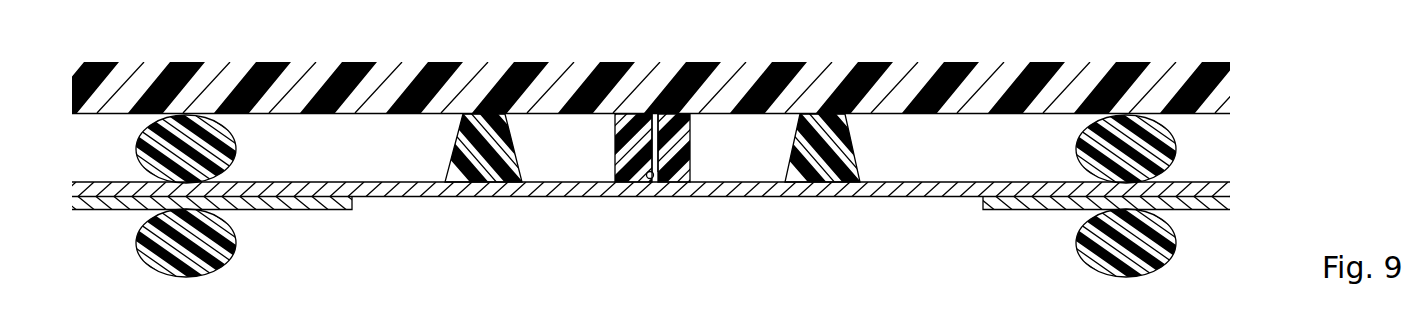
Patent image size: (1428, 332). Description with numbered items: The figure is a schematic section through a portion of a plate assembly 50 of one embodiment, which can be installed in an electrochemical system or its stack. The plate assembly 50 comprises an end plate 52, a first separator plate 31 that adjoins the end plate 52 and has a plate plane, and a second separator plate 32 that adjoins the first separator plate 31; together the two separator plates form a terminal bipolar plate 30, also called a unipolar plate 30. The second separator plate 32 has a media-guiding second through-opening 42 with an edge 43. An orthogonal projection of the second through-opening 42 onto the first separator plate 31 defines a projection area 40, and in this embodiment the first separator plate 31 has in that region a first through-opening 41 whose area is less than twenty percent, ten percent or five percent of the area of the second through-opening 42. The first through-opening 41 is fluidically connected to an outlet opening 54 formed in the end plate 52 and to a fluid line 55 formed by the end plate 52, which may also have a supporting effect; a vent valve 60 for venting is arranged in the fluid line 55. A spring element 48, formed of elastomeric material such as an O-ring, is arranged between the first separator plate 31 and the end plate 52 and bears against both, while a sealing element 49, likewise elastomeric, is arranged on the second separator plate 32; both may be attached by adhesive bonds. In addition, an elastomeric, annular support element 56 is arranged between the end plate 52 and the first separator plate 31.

The plate assembly 50 is at (62, 53).
The end plate 52 is at (297, 72).
The terminal bipolar plate 30 is at (639, 198).
The first separator plate 31 is at (100, 182).
The second separator plate 32 is at (110, 207).
The projection area 40 is at (667, 268).
The second through-opening 42 is at (982, 237).
The first through-opening 41 is at (651, 197).
The edge 43 is at (353, 206).
The spring element 48 is at (230, 153).
The sealing element 49 is at (217, 266).
The outlet opening 54 is at (649, 172).
The fluid line 55 is at (626, 173).
The elastomeric support element 56 is at (463, 155).
The vent valve 60 is at (667, 186).